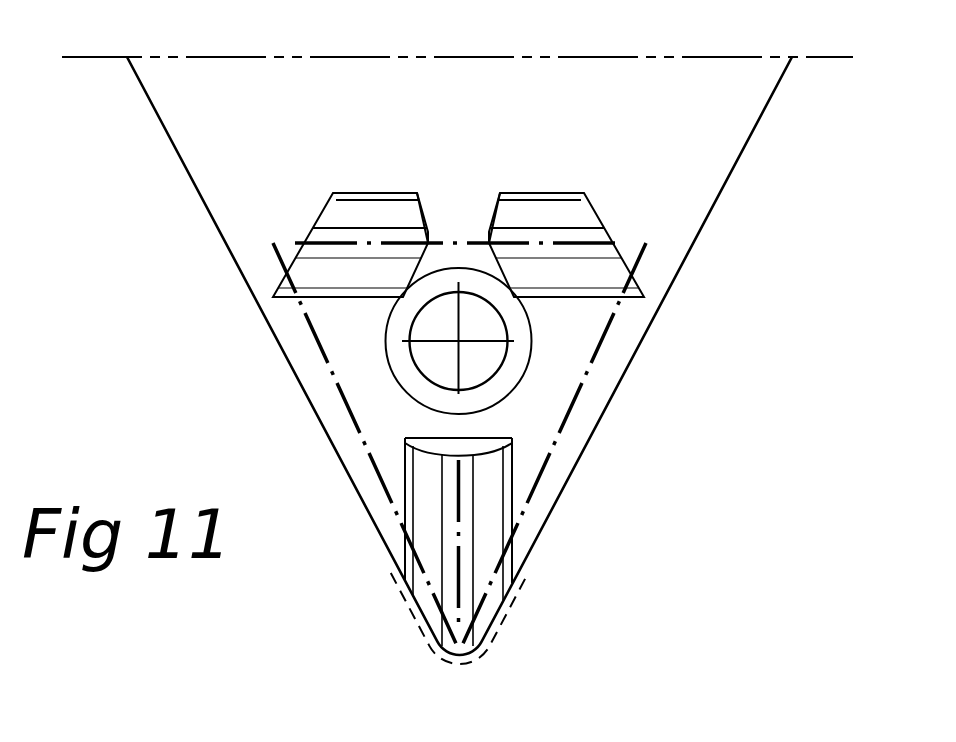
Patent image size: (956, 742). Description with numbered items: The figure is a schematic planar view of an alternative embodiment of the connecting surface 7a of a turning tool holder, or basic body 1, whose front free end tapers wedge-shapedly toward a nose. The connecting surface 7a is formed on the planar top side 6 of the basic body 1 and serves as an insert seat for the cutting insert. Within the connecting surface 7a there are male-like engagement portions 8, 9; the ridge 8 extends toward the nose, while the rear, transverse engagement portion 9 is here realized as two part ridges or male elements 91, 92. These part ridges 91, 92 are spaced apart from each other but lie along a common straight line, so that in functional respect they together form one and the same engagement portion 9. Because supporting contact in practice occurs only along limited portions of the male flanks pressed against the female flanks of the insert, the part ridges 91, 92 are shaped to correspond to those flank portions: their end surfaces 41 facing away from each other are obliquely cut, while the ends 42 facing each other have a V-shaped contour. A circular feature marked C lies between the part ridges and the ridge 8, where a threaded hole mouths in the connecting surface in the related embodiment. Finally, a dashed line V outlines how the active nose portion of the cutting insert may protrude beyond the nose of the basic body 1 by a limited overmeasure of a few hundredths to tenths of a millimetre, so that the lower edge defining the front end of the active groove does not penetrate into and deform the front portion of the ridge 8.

The basic body 1 is at (732, 223).
The top side 6 is at (190, 112).
The connecting surface 7a is at (380, 378).
The engagement portion 8 is at (400, 533).
The rear transverse engagement portion 9 is at (462, 148).
The end surface 41 is at (308, 236).
The end 42 is at (428, 226).
The part ridge 91 is at (378, 193).
The part ridge 92 is at (538, 193).
The center / circular bore C is at (458, 341).
The dashed line V is at (485, 645).